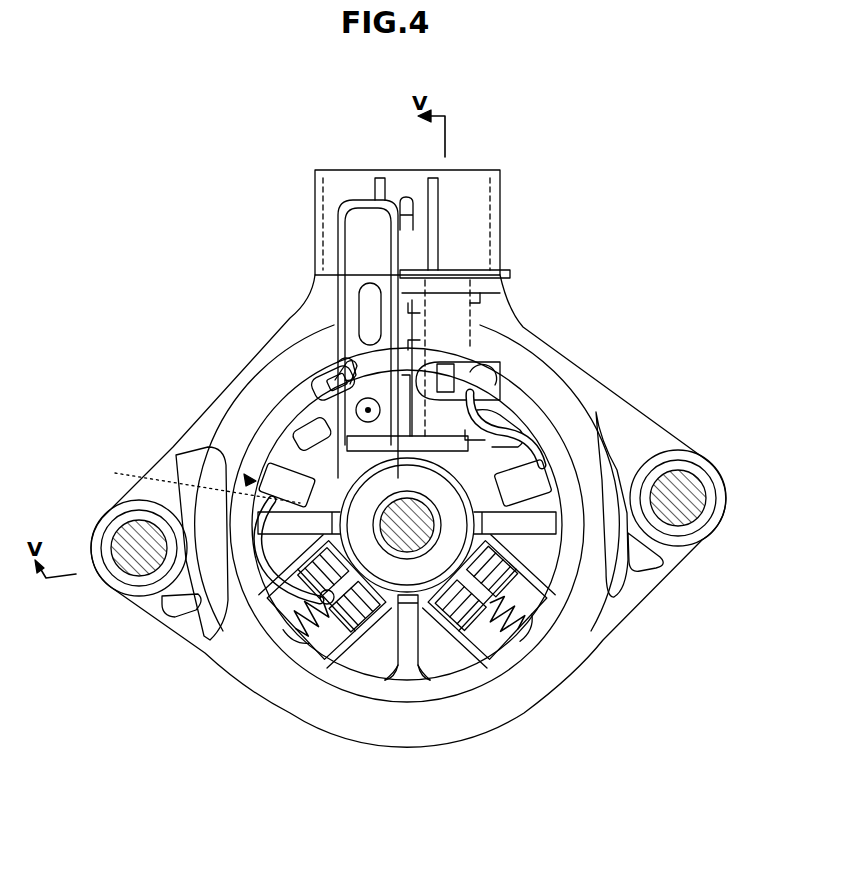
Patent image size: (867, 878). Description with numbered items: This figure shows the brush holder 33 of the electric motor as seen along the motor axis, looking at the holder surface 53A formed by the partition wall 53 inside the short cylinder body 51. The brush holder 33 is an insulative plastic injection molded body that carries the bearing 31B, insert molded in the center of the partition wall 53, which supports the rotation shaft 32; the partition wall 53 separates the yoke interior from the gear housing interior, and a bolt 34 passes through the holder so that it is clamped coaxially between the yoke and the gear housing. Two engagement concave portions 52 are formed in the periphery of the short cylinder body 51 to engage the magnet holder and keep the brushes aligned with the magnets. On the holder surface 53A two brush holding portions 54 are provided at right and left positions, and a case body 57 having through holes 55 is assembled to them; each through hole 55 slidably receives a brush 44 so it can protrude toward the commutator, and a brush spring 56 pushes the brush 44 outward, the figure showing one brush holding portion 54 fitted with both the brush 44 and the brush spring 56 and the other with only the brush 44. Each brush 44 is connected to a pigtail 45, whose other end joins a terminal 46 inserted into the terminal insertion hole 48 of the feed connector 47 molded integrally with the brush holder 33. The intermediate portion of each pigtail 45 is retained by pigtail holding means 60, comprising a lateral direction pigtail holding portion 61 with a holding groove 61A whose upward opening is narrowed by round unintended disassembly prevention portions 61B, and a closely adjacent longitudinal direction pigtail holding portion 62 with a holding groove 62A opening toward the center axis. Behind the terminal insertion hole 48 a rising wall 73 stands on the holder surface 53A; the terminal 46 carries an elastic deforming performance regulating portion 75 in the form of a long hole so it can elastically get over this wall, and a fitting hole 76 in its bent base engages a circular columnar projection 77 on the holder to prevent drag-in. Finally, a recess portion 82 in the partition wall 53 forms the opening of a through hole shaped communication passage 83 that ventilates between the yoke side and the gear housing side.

The bearing 31B is at (407, 525).
The rotation shaft 32 is at (447, 547).
The brush holder 33 is at (524, 320).
The bolt 34 is at (128, 567).
The brush 44 is at (323, 667).
The pigtail 45 is at (223, 630).
The terminal 46 is at (368, 225).
The feed connector 47 is at (500, 191).
The terminal insertion hole 48 is at (343, 250).
The short cylinder body 51 is at (556, 413).
The engagement concave portion 52 is at (250, 440).
The partition wall 53 is at (382, 658).
The holder surface 53A is at (368, 652).
The brush holding portion 54 is at (352, 657).
The through hole 55 is at (293, 620).
The brush spring 56 is at (300, 647).
The case body 57 is at (307, 653).
The pigtail holding means 60 is at (195, 474).
The lateral direction pigtail holding portion 61 is at (270, 437).
The holding groove 61A is at (322, 382).
The unintended disassembly prevention portion 61B is at (322, 382).
The longitudinal direction pigtail holding portion 62 is at (215, 448).
The holding groove 62A is at (189, 483).
The rising wall 73 is at (380, 447).
The elastic deforming performance regulating portion 75 is at (362, 300).
The fitting hole 76 is at (367, 422).
The projection 77 is at (372, 414).
The recess portion 82 is at (332, 378).
The communication passage 83 is at (332, 364).